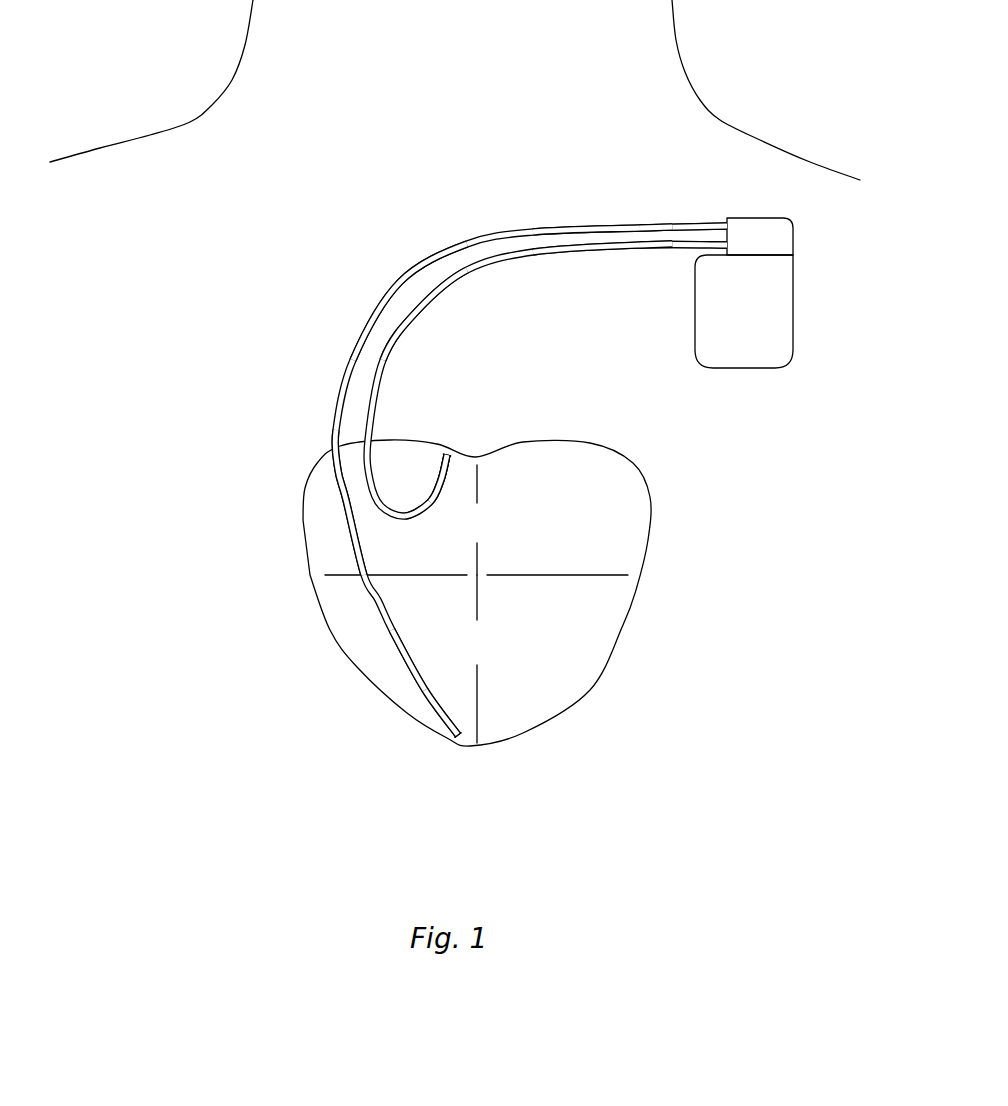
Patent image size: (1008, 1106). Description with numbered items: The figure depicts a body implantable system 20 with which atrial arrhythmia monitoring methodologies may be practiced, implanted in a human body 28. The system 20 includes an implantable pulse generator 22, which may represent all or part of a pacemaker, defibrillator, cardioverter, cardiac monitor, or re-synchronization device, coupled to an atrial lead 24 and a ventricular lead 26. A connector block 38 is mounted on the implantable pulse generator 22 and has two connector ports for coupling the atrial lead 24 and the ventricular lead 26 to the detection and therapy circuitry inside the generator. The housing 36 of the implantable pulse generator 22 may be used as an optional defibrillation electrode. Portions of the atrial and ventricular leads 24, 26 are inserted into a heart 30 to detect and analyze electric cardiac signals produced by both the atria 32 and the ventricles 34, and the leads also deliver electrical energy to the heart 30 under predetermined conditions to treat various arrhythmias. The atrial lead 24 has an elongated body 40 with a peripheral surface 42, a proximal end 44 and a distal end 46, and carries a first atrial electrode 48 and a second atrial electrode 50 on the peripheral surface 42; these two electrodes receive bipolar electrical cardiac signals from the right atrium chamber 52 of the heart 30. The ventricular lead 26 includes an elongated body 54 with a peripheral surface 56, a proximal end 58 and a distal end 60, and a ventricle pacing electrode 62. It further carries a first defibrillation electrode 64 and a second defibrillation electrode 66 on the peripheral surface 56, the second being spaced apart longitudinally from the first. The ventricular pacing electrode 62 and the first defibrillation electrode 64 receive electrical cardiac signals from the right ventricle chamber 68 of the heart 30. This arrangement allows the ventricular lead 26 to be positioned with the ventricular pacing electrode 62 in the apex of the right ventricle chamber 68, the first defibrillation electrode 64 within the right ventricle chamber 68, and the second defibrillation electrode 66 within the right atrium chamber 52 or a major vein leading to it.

The body implantable system 20 is at (637, 190).
The implantable pulse generator 22 is at (792, 285).
The atrial lead 24 is at (500, 276).
The ventricular lead 26 is at (477, 238).
The human body 28 is at (198, 147).
The heart 30 is at (705, 508).
The atria 32 is at (489, 535).
The ventricles 34 is at (488, 657).
The housing 36 is at (791, 330).
The connector block 38 is at (790, 238).
The elongated body 40 is at (571, 254).
The peripheral surface 42 is at (415, 320).
The proximal end 44 is at (725, 248).
The distal end 46 is at (436, 460).
The first atrial electrode 48 is at (448, 454).
The second atrial electrode 50 is at (440, 478).
The right atrium chamber 52 is at (438, 554).
The elongated body 54 is at (573, 224).
The peripheral surface 56 is at (398, 282).
The proximal end 58 is at (727, 222).
The distal end 60 is at (468, 750).
The ventricle pacing electrode 62 is at (465, 748).
The first defibrillation electrode 64 is at (418, 688).
The second defibrillation electrode 66 is at (340, 515).
The right ventricle chamber 68 is at (448, 623).